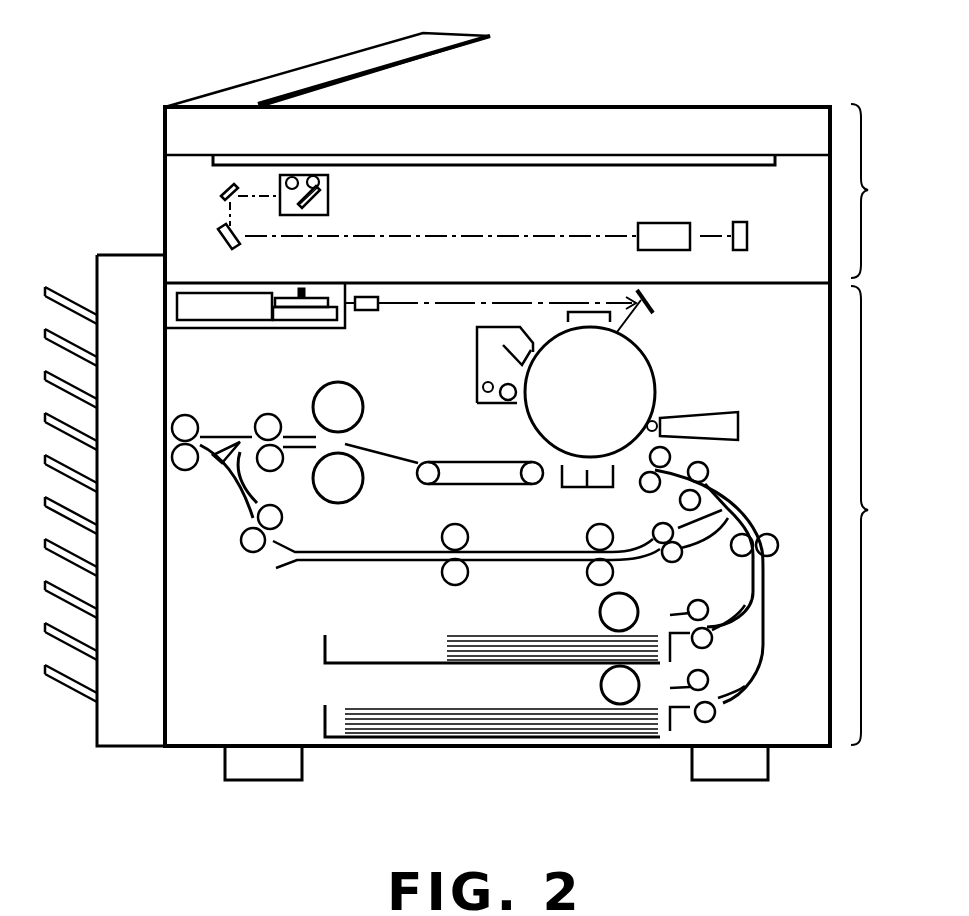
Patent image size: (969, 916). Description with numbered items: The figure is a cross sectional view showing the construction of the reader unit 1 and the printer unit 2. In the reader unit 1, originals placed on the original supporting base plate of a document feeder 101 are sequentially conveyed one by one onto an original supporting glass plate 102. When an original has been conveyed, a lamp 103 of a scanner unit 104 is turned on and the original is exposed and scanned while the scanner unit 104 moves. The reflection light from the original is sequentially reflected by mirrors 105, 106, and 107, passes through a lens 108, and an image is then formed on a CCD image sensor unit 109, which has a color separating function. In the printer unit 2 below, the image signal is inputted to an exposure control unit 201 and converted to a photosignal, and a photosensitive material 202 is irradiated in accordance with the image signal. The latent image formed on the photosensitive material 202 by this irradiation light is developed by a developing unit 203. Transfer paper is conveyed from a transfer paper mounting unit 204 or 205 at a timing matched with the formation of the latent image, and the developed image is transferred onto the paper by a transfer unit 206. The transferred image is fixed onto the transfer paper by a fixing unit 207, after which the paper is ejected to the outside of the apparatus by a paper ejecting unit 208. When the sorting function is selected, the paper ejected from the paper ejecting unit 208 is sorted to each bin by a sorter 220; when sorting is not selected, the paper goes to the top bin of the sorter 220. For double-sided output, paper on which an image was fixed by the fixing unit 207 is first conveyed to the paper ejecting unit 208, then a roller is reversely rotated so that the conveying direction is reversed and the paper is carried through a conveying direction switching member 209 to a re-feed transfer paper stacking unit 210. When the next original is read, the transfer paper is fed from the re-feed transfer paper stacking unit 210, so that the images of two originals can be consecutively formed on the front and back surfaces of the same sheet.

The reader unit 1 is at (893, 201).
The printer unit 2 is at (897, 527).
The document feeder 101 is at (320, 73).
The original supporting glass plate 102 is at (556, 158).
The lamp 103 is at (332, 183).
The scanner unit 104 is at (330, 204).
The mirror 105 is at (310, 206).
The mirror 106 is at (221, 192).
The mirror 107 is at (218, 234).
The lens 108 is at (656, 228).
The CCD image sensor unit 109 is at (746, 236).
The exposure control unit 201 is at (292, 292).
The photosensitive material 202 is at (562, 356).
The developing unit 203 is at (696, 424).
The transfer paper mounting unit 204 is at (667, 648).
The transfer paper mounting unit 205 is at (667, 720).
The transfer unit 206 is at (588, 490).
The fixing unit 207 is at (350, 401).
The paper ejecting unit 208 is at (173, 455).
The conveying direction switching member 209 is at (220, 462).
The re-feed transfer paper stacking unit 210 is at (520, 558).
The sorter 220 is at (128, 737).